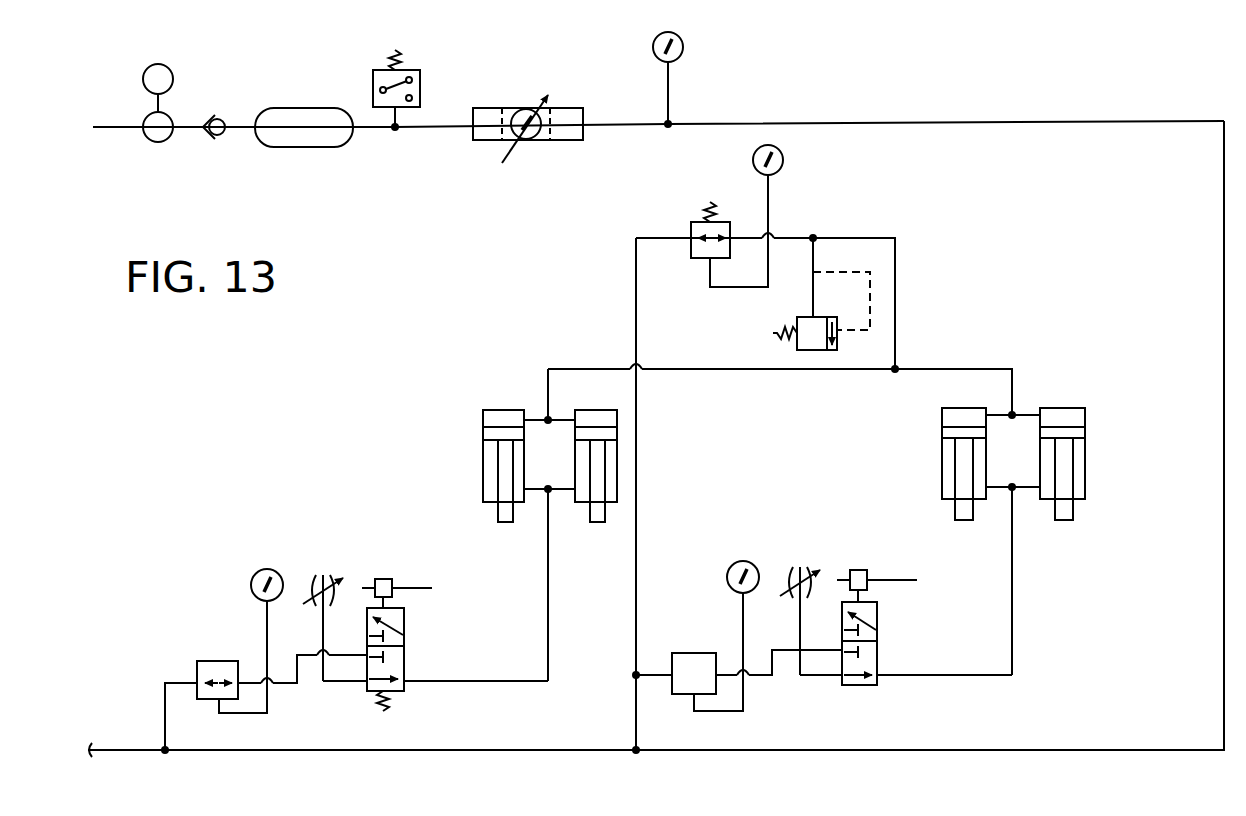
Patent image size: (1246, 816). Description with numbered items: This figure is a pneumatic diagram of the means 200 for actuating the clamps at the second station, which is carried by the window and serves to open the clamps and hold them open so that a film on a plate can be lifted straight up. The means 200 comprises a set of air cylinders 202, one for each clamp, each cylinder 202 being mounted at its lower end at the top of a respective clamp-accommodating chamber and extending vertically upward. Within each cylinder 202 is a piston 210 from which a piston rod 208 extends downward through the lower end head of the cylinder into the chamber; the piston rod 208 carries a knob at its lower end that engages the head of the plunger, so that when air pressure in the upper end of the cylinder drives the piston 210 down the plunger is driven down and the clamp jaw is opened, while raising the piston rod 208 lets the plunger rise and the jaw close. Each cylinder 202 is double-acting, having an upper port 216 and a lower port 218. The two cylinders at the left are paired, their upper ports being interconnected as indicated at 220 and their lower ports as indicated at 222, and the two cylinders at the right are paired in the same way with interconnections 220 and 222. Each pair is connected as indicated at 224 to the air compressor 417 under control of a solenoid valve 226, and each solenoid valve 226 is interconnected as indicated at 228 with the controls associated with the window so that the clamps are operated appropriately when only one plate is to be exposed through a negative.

The air compressor 417 is at (158, 143).
The means for actuating the gripping means 200 is at (1108, 440).
The air cylinder 202 is at (483, 466).
The piston rod 208 is at (503, 512).
The piston 210 is at (490, 435).
The upper port 216 is at (527, 430).
The lower port 218 is at (570, 486).
The upper port interconnection 220 is at (543, 417).
The lower port interconnection 222 is at (537, 489).
The connection to air compressor 224 is at (990, 90).
The solenoid valve 226 is at (404, 662).
The interconnection with window controls 228 is at (412, 585).